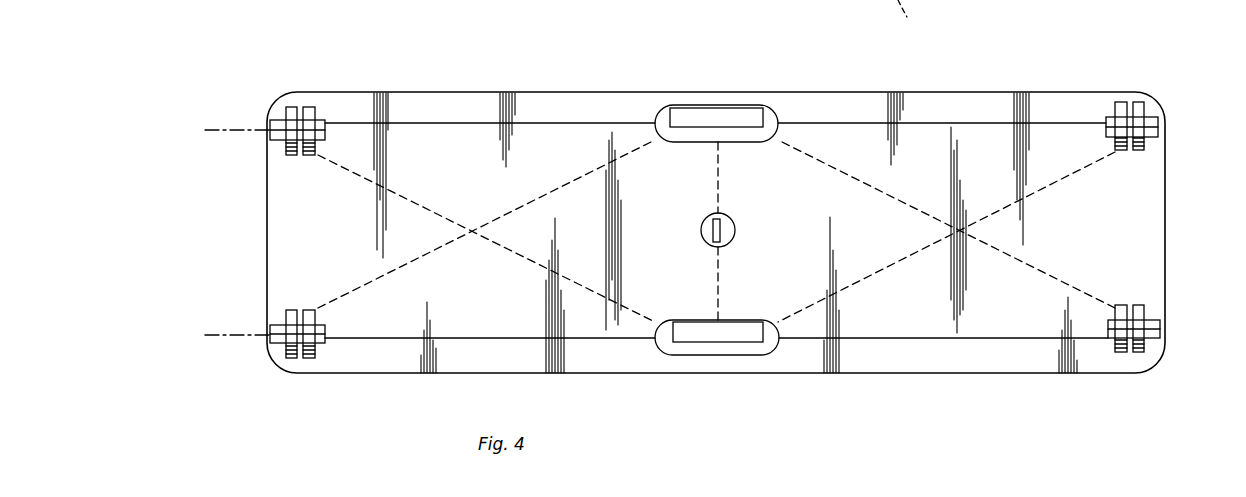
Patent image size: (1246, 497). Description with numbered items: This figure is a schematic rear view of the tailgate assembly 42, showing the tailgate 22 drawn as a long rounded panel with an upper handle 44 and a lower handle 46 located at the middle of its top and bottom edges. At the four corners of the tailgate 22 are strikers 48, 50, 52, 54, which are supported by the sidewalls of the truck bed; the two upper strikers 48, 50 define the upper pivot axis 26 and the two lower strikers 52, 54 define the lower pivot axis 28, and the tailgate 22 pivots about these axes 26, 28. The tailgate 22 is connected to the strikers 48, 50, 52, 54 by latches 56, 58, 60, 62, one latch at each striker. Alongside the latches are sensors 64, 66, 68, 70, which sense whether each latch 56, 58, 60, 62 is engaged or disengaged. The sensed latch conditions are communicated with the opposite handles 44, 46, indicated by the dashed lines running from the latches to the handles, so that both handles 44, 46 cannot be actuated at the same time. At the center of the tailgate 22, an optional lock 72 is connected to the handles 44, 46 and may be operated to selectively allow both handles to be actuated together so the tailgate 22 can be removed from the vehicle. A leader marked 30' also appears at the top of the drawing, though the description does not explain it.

The tailgate 22 is at (423, 145).
The upper pivot axis 26 is at (230, 130).
The lower pivot axis 28 is at (230, 335).
The carriage 30' is at (908, 23).
The tailgate assembly 42 is at (1013, 80).
The upper handle 44 is at (740, 108).
The lower handle 46 is at (740, 355).
The striker 48 is at (283, 121).
The striker 50 is at (1146, 113).
The striker 52 is at (283, 342).
The striker 54 is at (1150, 338).
The latch 56 is at (308, 106).
The latch 58 is at (1120, 101).
The latch 60 is at (310, 359).
The latch 62 is at (1122, 353).
The sensor 64 is at (291, 106).
The sensor 66 is at (1138, 101).
The sensor 68 is at (291, 359).
The sensor 70 is at (1140, 353).
The lock 72 is at (701, 230).